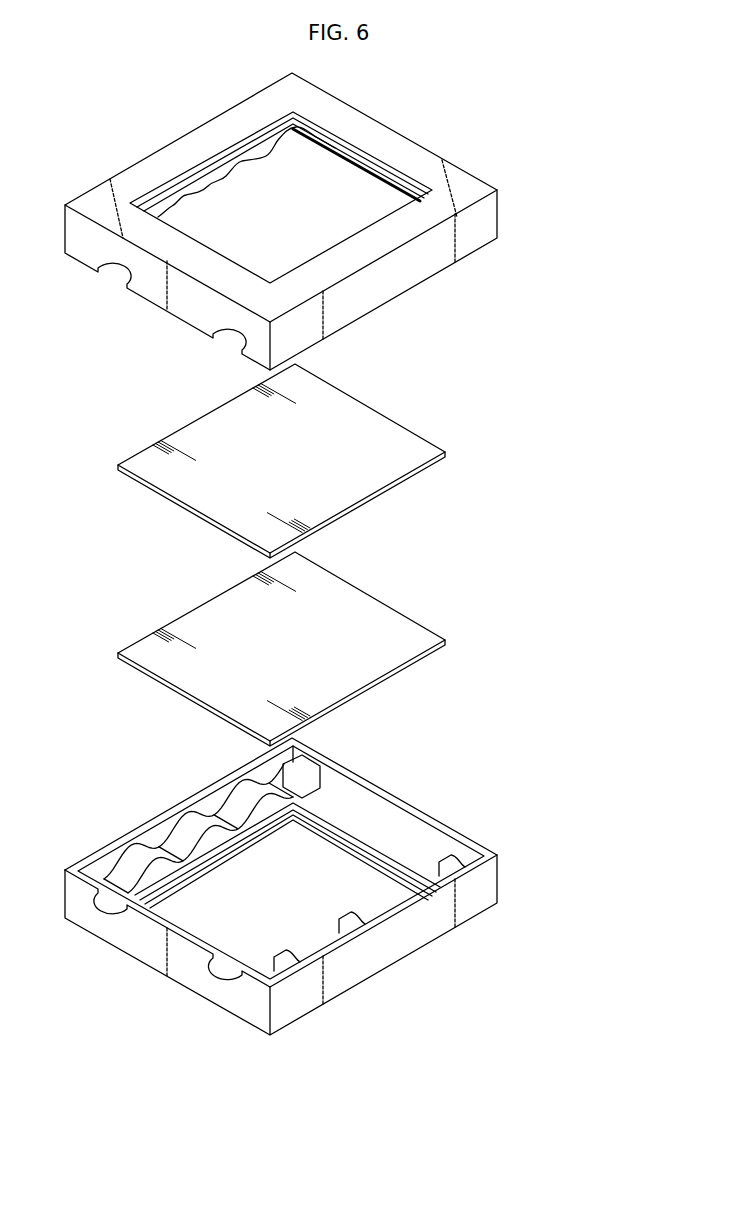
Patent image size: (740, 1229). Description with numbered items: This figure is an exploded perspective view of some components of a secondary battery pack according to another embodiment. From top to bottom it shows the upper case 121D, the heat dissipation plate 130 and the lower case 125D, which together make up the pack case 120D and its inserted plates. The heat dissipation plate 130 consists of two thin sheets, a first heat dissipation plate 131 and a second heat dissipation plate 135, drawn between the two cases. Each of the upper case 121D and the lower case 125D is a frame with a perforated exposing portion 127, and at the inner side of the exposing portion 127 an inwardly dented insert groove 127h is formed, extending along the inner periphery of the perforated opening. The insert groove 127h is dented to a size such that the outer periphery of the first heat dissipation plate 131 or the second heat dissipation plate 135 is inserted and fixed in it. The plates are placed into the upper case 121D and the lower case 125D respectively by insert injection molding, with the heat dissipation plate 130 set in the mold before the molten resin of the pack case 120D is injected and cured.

The pack case 120D is at (346, 554).
The upper case 121D is at (487, 217).
The lower case 125D is at (313, 886).
The exposing portion 127 is at (373, 221).
The insert groove 127h is at (262, 156).
The heat dissipation plate 130 is at (332, 555).
The first heat dissipation plate 131 is at (437, 445).
The second heat dissipation plate 135 is at (305, 649).